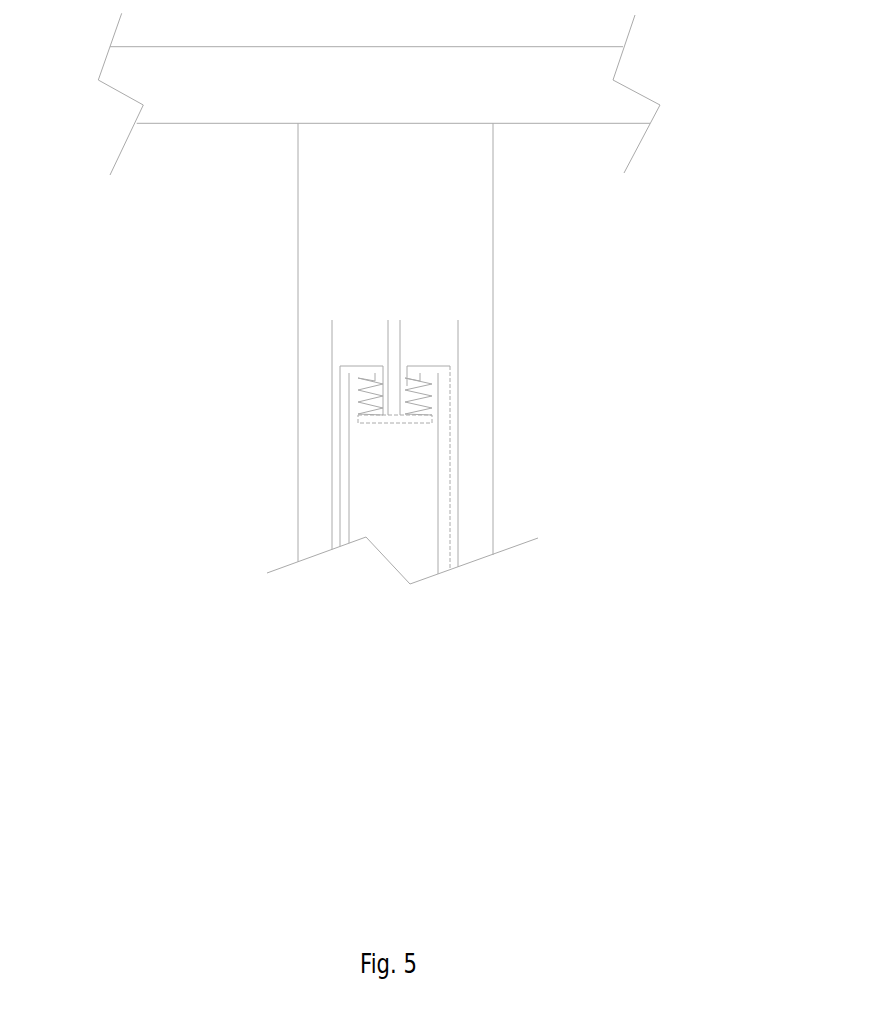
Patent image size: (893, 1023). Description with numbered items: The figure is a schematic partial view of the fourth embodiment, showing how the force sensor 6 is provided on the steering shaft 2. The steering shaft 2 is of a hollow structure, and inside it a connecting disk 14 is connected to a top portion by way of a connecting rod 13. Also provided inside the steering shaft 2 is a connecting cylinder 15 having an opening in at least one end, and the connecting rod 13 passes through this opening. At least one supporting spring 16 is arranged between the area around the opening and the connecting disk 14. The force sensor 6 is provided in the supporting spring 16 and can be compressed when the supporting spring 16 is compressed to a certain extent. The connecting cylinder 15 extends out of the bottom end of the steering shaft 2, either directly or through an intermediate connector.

The steering shaft 2 is at (472, 213).
The force sensor 6 is at (427, 379).
The connecting rod 13 is at (397, 343).
The connecting disk 14 is at (382, 420).
The connecting cylinder 15 is at (345, 443).
The supporting spring 16 is at (430, 407).